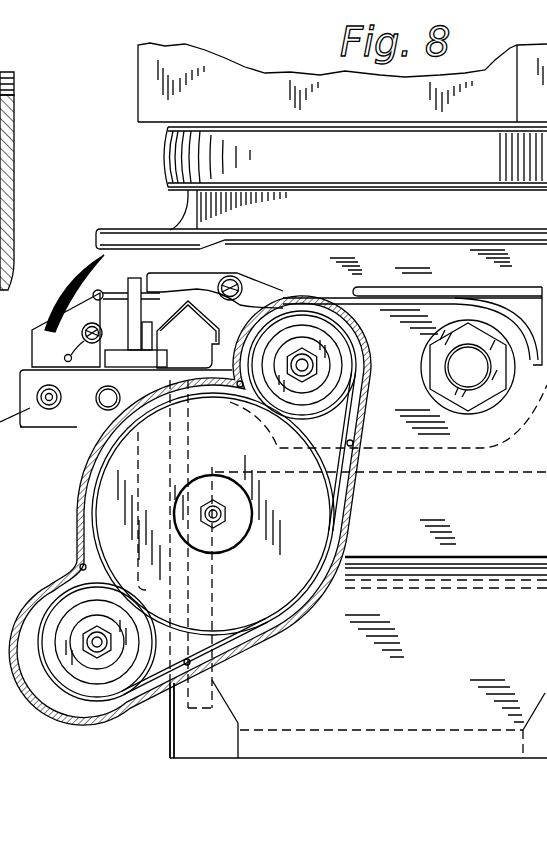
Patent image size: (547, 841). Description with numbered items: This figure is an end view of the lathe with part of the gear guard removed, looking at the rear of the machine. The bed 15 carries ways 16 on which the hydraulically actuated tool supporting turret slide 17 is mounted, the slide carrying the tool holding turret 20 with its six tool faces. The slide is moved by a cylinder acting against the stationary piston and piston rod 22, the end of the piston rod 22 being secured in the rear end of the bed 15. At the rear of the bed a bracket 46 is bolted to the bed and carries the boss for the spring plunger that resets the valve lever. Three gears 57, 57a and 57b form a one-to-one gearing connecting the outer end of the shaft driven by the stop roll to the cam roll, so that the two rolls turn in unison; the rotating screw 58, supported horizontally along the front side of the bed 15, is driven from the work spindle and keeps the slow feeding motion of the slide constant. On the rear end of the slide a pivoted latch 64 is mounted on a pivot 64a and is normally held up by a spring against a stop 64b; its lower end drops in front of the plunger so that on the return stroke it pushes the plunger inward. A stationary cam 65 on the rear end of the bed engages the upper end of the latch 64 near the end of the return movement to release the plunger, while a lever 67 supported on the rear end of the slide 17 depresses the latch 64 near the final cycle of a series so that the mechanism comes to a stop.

The bed 15 is at (187, 714).
The ways 16 is at (188, 334).
The turret slide 17 is at (183, 208).
The tool holding turret 20 is at (227, 78).
The piston and piston rod 22 is at (477, 367).
The bracket 46 is at (72, 473).
The gear 57 is at (340, 377).
The gear 57a is at (310, 502).
The gear 57b is at (60, 688).
The rotating screw 58 is at (90, 405).
The pivoted latch 64 is at (50, 320).
The pivot 64a is at (97, 317).
The stop 64b is at (98, 290).
The stationary cam 65 is at (134, 278).
The lever 67 is at (182, 281).